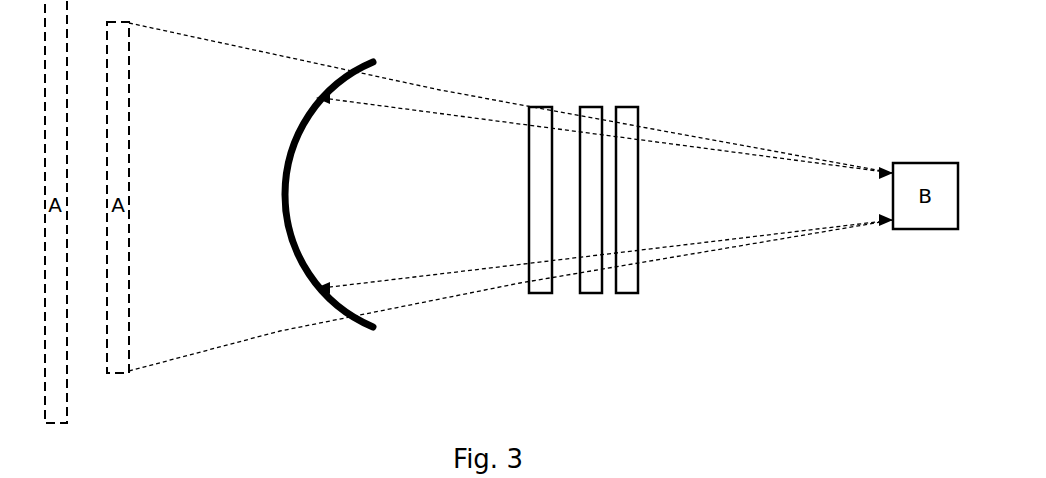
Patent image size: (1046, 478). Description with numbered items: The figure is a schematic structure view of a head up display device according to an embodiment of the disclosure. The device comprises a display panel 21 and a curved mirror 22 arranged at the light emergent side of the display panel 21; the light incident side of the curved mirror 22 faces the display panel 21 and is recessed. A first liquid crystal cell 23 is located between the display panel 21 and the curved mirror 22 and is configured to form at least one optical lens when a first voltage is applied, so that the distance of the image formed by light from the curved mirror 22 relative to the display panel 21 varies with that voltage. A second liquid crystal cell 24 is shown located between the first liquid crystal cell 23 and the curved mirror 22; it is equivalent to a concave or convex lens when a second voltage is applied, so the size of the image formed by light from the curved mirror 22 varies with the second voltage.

The display panel 21 is at (630, 106).
The curved mirror 22 is at (356, 57).
The first liquid crystal cell 23 is at (585, 106).
The second liquid crystal cell 24 is at (533, 106).